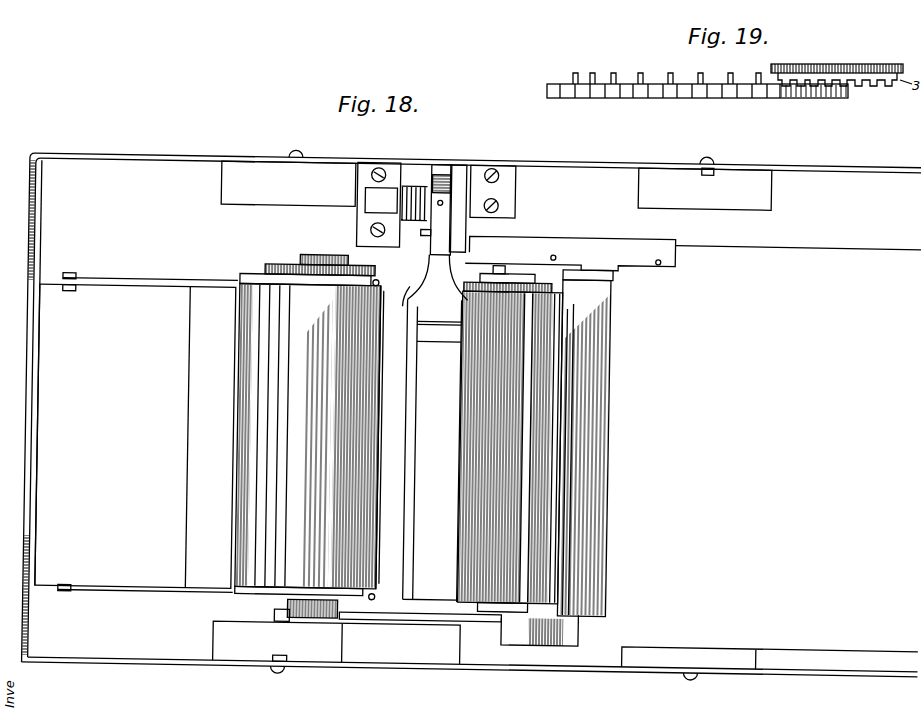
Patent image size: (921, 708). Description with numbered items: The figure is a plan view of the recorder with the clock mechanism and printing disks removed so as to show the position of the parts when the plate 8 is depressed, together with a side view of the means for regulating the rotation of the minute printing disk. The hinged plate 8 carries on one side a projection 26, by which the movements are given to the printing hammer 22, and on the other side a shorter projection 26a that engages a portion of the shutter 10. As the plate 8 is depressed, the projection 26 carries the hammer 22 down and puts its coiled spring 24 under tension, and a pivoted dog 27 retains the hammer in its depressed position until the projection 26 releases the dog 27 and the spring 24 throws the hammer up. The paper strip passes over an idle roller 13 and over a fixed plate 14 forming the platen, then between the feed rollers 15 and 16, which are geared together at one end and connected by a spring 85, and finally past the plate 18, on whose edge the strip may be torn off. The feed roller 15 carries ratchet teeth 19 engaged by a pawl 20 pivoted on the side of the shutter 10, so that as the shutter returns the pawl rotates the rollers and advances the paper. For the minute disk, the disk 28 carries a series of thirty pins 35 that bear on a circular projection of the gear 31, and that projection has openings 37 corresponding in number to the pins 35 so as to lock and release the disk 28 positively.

In FIG. 18, the plate 8 is at (790, 242).
In FIG. 18, the shutter 10 is at (604, 520).
In FIG. 18, the idle roller 13 is at (540, 422).
In FIG. 18, the fixed plate 14 is at (473, 443).
In FIG. 18, the feed roller 15 is at (380, 437).
In FIG. 18, the feed roller 16 is at (307, 436).
In FIG. 18, the plate 18 is at (136, 432).
In FIG. 18, the ratchet teeth 19 is at (282, 611).
In FIG. 18, the pawl 20 is at (401, 613).
In FIG. 18, the hammer 22 is at (435, 238).
In FIG. 18, the coiled spring 24 is at (412, 180).
In FIG. 18, the projection 26 is at (569, 236).
In FIG. 18, the projection 26a is at (573, 622).
In FIG. 18, the dog 27 is at (466, 238).
In FIG. 19, the disk 28 is at (708, 88).
In FIG. 19, the gear 31 is at (813, 65).
In FIG. 19, the pins 35 is at (641, 72).
In FIG. 19, the openings 37 is at (855, 86).
In FIG. 18, the spring 85 is at (381, 279).